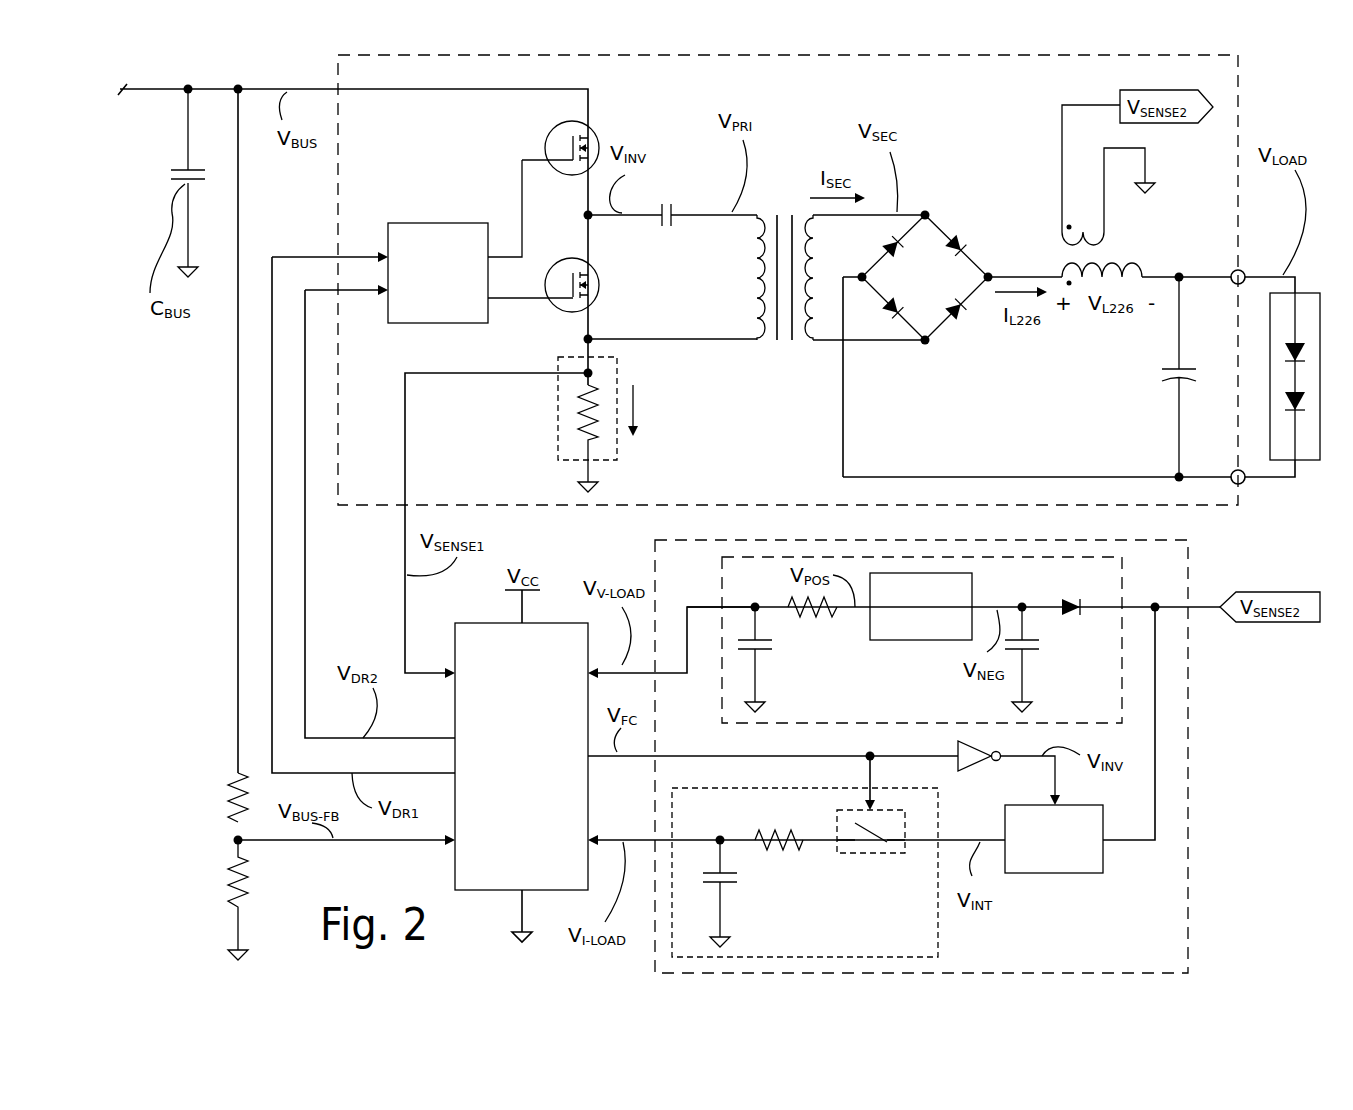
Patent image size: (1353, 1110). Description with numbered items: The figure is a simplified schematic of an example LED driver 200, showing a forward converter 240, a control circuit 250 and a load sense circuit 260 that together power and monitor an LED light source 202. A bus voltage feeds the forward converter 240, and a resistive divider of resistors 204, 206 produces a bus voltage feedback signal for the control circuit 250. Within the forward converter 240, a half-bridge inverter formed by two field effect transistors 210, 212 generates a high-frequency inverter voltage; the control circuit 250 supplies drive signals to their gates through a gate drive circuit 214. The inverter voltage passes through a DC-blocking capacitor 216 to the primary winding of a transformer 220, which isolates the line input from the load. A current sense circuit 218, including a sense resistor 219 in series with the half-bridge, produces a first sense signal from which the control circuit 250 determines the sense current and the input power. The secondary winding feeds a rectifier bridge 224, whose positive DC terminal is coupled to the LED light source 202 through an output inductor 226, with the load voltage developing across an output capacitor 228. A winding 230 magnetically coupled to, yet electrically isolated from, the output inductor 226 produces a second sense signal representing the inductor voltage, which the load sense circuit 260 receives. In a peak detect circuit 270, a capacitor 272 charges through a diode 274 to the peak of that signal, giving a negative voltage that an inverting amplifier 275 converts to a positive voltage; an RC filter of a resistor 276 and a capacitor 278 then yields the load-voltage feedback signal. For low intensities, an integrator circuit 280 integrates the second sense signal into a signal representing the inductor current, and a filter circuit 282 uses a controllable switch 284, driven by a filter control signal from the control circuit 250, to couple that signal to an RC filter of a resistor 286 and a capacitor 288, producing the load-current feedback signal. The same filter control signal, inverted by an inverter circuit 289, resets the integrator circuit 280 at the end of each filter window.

The LED driver 200 is at (198, 549).
The LED light source 202 is at (1308, 443).
The resistor 204 is at (233, 790).
The resistor 206 is at (233, 872).
The field effect transistor 210 is at (548, 135).
The field effect transistor 212 is at (556, 268).
The gate drive circuit 214 is at (477, 240).
The DC-blocking capacitor 216 is at (683, 207).
The current sense circuit 218 is at (617, 373).
The sense resistor 219 is at (580, 412).
The transformer 220 is at (786, 185).
The rectifier bridge 224 is at (960, 208).
The output inductor 226 is at (1129, 252).
The output capacitor 228 is at (1170, 380).
The winding 230 is at (1046, 229).
The forward converter 240 is at (563, 507).
The control circuit 250 is at (540, 855).
The load sense circuit 260 is at (1189, 877).
The peak detect circuit 270 is at (1122, 584).
The capacitor 272 is at (1028, 649).
The diode 274 is at (1073, 600).
The inverting amplifier 275 is at (907, 641).
The resistor 276 is at (822, 610).
The capacitor 278 is at (762, 649).
The integrator circuit 280 is at (1087, 862).
The filter circuit 282 is at (938, 940).
The controllable switch 284 is at (872, 855).
The resistor 286 is at (793, 850).
The capacitor 288 is at (728, 882).
The inverter circuit 289 is at (975, 763).